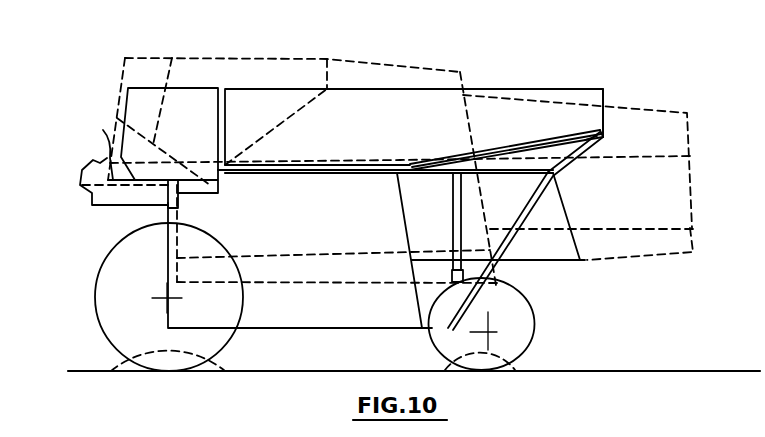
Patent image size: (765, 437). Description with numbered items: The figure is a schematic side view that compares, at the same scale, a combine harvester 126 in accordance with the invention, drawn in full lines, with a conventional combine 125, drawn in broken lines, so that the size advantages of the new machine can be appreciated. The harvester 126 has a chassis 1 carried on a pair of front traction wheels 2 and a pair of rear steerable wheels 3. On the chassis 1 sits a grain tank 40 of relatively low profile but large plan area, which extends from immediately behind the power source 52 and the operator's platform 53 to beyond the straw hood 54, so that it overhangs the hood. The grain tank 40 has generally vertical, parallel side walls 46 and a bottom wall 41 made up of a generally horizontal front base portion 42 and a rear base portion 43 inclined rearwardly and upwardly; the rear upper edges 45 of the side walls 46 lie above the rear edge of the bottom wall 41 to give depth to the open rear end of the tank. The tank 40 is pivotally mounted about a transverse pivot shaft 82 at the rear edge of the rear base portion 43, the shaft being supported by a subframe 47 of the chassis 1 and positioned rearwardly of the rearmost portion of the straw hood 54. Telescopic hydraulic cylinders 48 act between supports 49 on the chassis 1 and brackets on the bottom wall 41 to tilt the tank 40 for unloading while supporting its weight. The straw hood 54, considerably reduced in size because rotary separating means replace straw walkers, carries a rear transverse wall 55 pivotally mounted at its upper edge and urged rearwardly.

The chassis 1 is at (318, 329).
The front traction wheels 2 is at (243, 338).
The rear steerable wheels 3 is at (532, 352).
The grain tank 40 is at (523, 89).
The bottom wall 41 is at (293, 171).
The front base portion 42 is at (333, 174).
The rear base portion 43 is at (510, 147).
The rear upper edges 45 is at (573, 89).
The side walls 46 is at (380, 140).
The subframe 47 is at (590, 147).
The telescopic hydraulic cylinders 48 is at (453, 225).
The supports 49 is at (500, 278).
The power source 52 is at (142, 88).
The operator's platform 53 is at (105, 140).
The straw hood 54 is at (560, 184).
The rear transverse wall 55 is at (568, 220).
The transverse pivot shaft 82 is at (600, 133).
The conventional combine 125 is at (318, 58).
The combine harvester 126 is at (410, 89).